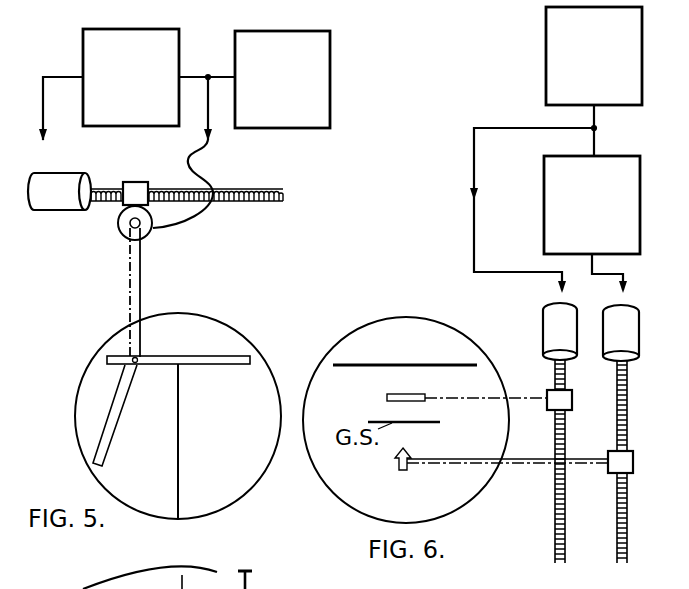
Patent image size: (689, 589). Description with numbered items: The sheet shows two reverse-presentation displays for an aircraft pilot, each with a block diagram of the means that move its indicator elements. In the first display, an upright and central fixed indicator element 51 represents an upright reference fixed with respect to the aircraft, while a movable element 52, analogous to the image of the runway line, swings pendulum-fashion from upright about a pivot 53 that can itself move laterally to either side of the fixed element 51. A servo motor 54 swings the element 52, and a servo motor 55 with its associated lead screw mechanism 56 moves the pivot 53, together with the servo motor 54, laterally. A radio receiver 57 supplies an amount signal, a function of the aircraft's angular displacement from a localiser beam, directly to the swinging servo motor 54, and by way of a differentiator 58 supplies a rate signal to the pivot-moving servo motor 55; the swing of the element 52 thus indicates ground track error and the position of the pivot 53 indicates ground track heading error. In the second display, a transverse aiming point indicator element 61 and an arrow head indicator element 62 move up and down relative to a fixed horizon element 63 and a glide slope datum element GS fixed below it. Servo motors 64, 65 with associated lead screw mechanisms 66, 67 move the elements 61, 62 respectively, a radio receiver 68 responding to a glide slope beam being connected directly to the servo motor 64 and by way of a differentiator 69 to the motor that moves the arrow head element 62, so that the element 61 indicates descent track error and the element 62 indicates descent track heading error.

In FIG. 5, the fixed indicator element 51 is at (178, 455).
In FIG. 5, the movable element 52 is at (114, 400).
In FIG. 5, the pivot 53 is at (141, 232).
In FIG. 5, the servo motor 54 is at (121, 236).
In FIG. 5, the servo motor 55 is at (58, 179).
In FIG. 5, the lead screw mechanism 56 is at (153, 185).
In FIG. 5, the radio receiver 57 is at (240, 44).
In FIG. 5, the differentiator 58 is at (84, 45).
In FIG. 6, the aiming point indicator element 61 is at (387, 397).
In FIG. 6, the arrow head indicator element 62 is at (396, 460).
In FIG. 6, the fixed horizon element 63 is at (399, 364).
In FIG. 6, the servo motor 64 is at (552, 325).
In FIG. 6, the servo motor 65 is at (613, 312).
In FIG. 6, the lead screw mechanism 66 is at (587, 388).
In FIG. 6, the lead screw mechanism 67 is at (610, 483).
In FIG. 6, the radio receiver 68 is at (558, 71).
In FIG. 6, the differentiator 69 is at (548, 200).